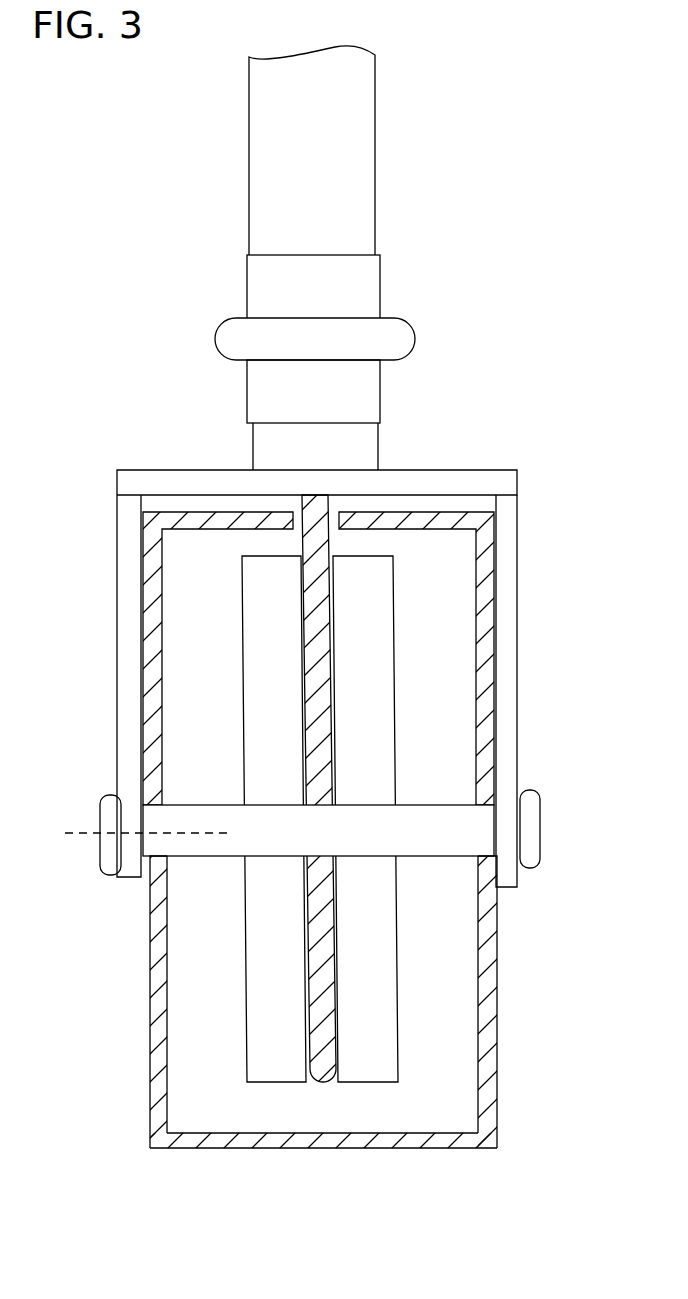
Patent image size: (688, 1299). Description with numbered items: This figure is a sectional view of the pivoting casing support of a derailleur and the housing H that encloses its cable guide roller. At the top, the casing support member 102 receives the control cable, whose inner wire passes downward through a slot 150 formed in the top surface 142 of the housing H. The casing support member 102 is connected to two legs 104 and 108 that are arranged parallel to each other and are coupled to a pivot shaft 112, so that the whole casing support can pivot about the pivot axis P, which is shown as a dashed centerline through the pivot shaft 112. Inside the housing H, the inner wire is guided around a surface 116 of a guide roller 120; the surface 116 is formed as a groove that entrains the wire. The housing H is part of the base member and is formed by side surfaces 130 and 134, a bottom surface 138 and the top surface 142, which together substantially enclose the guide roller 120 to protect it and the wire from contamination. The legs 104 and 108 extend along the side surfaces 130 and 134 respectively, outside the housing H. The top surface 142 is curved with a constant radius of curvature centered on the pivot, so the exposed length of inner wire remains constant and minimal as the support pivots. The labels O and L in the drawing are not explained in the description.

The casing support member 102 is at (182, 470).
The leg 104 is at (117, 708).
The leg 108 is at (507, 660).
The pivot shaft 112 is at (530, 838).
The surface 116 is at (337, 687).
The guide roller 120 is at (372, 972).
The side surface 130 is at (158, 952).
The side surface 134 is at (486, 957).
The bottom surface 138 is at (433, 1137).
The top surface 142 is at (418, 520).
The slot 150 is at (298, 522).
The object O is at (355, 122).
The light L is at (235, 89).
The pivot axis P is at (137, 830).
The housing H is at (327, 1035).